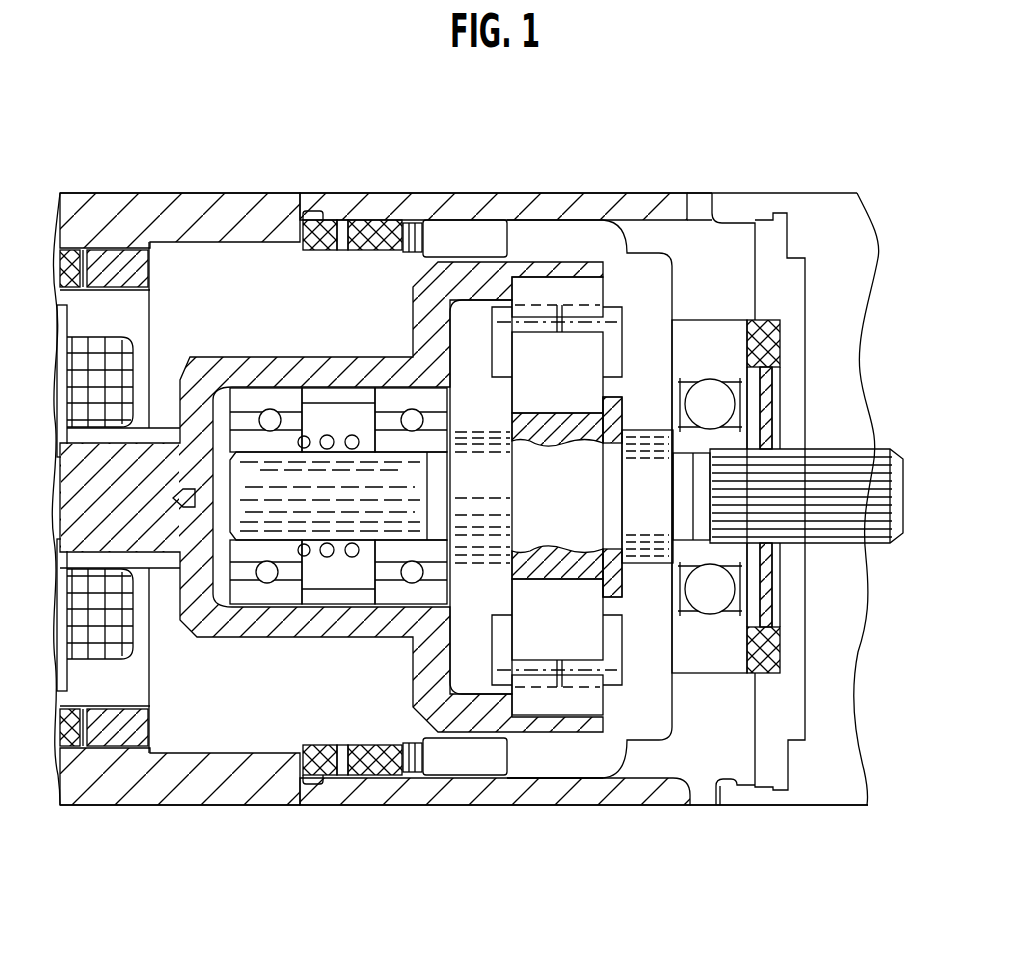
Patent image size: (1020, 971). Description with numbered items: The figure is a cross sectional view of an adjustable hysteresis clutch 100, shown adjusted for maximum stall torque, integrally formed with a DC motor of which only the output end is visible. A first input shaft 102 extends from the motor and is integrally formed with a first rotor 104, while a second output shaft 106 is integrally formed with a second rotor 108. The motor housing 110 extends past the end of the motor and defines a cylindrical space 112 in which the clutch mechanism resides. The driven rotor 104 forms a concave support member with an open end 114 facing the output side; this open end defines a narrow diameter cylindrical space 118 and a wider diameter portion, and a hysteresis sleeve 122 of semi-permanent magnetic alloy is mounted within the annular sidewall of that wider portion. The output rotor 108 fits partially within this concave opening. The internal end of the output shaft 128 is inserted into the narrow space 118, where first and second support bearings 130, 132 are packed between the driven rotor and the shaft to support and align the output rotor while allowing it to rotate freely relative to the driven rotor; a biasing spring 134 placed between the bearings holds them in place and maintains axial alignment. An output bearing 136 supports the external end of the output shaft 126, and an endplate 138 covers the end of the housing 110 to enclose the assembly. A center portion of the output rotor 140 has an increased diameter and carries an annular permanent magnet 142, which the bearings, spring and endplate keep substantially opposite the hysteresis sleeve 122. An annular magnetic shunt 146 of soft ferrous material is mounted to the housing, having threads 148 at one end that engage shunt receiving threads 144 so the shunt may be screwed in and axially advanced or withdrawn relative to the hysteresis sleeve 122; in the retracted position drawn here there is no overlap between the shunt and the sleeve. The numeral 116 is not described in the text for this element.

The adjustable hysteresis clutch 100 is at (664, 826).
The first input shaft 102 is at (137, 530).
The first rotor 104 is at (350, 218).
The second output shaft 106 is at (843, 453).
The second rotor 108 is at (655, 393).
The motor housing 110 is at (253, 806).
The cylindrical space 112 is at (222, 738).
The open end 114 is at (642, 685).
The end plate 116 is at (796, 826).
The narrow diameter cylindrical space 118 is at (283, 745).
The hysteresis sleeve 122 is at (578, 290).
The external end of the output shaft 126 is at (838, 543).
The internal end of the output shaft 128 is at (253, 473).
The first support bearing 130 is at (270, 410).
The second support bearing 132 is at (408, 410).
The biasing spring 134 is at (325, 435).
The output bearing 136 is at (715, 375).
The endplate 138 is at (737, 757).
The center portion of the output rotor 140 is at (523, 457).
The annular permanent magnet 142 is at (547, 353).
The shunt receiving threads 144 is at (383, 222).
The annular magnetic shunt 146 is at (490, 230).
The threads 148 is at (413, 225).